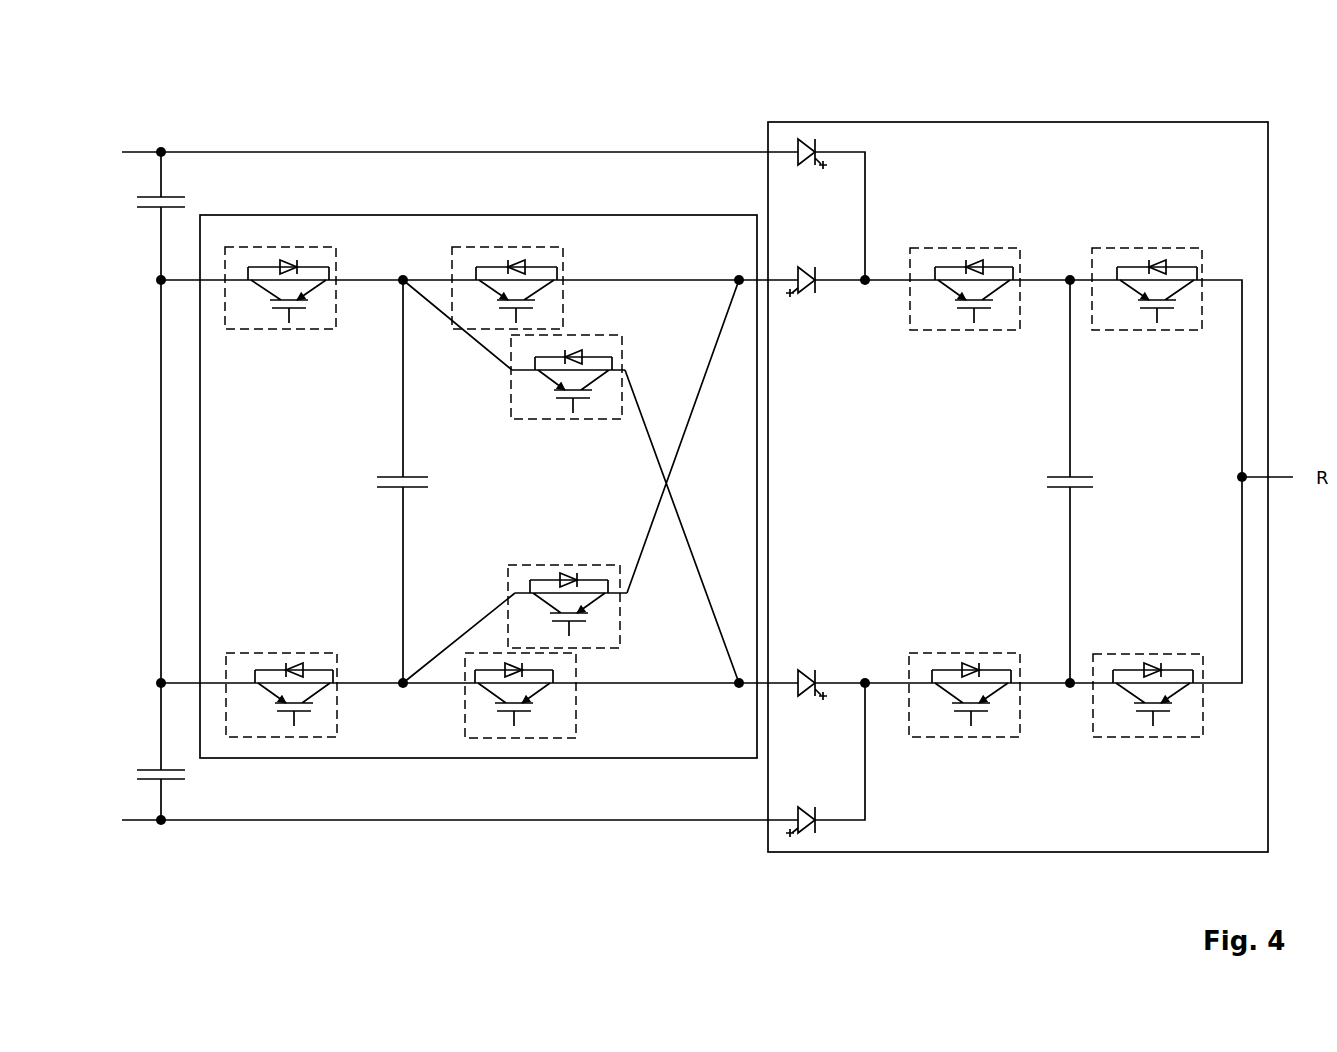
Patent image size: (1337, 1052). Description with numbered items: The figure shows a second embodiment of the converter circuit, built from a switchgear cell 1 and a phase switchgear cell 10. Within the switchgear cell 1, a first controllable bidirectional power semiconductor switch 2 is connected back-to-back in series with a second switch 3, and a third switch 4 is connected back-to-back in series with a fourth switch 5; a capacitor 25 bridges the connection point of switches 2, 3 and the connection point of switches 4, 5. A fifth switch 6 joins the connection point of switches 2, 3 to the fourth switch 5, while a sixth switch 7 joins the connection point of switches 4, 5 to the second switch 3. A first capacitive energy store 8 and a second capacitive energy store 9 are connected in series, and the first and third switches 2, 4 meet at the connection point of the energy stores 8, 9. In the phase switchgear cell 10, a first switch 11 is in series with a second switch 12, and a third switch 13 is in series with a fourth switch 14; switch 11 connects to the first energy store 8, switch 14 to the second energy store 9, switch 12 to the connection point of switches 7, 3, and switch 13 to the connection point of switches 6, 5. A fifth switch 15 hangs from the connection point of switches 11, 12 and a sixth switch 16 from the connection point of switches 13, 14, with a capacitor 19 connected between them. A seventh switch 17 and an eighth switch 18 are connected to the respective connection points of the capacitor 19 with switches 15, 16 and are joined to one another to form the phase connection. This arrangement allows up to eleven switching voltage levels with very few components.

The switchgear cell 1 is at (485, 215).
The first controllable bidirectional power semiconductor switch 2 is at (263, 247).
The second controllable bidirectional power semiconductor switch 3 is at (557, 247).
The third controllable bidirectional power semiconductor switch 4 is at (303, 737).
The fourth controllable bidirectional power semiconductor switch 5 is at (510, 738).
The fifth controllable bidirectional power semiconductor switch 6 is at (622, 335).
The sixth controllable bidirectional power semiconductor switch 7 is at (607, 648).
The first capacitive energy store 8 is at (175, 197).
The second capacitive energy store 9 is at (188, 779).
The phase switchgear cell 10 is at (1010, 122).
The first controllable bidirectional power semiconductor switch 11 is at (815, 142).
The second controllable bidirectional power semiconductor switch 12 is at (815, 272).
The third controllable bidirectional power semiconductor switch 13 is at (813, 693).
The fourth controllable bidirectional power semiconductor switch 14 is at (813, 827).
The fifth controllable bidirectional power semiconductor switch 15 is at (1020, 248).
The sixth controllable bidirectional power semiconductor switch 16 is at (968, 737).
The seventh controllable bidirectional power semiconductor switch 17 is at (1135, 248).
The eighth controllable bidirectional power semiconductor switch 18 is at (1125, 737).
The capacitor 19 is at (1048, 490).
The capacitor 25 is at (422, 477).